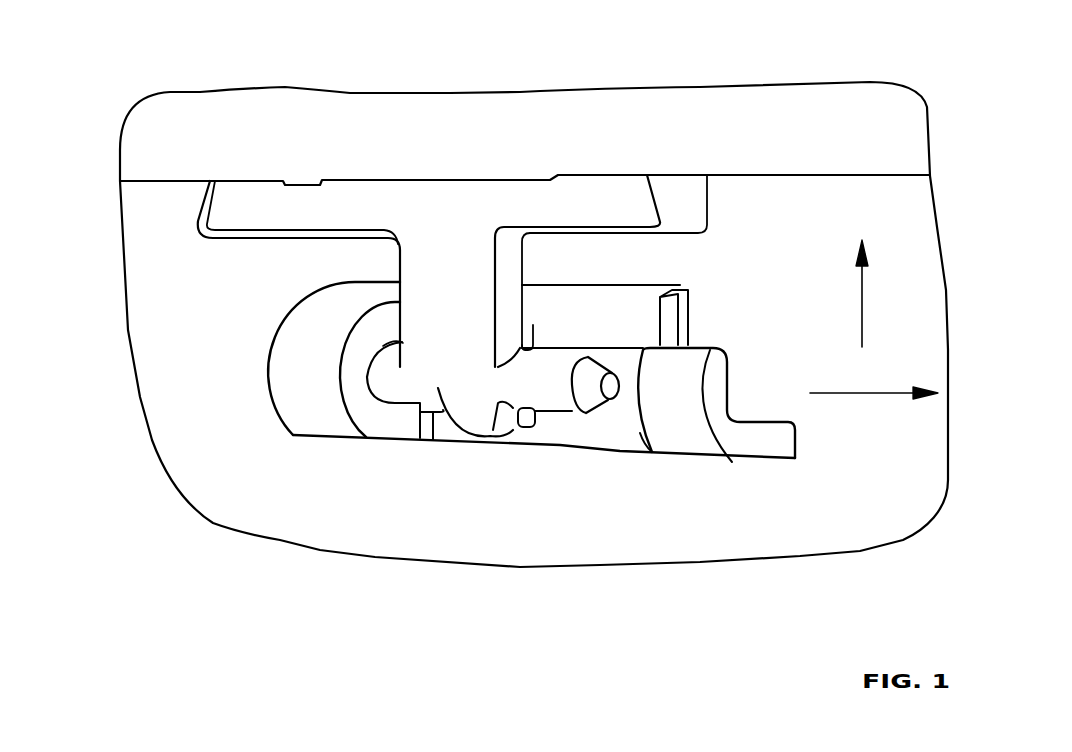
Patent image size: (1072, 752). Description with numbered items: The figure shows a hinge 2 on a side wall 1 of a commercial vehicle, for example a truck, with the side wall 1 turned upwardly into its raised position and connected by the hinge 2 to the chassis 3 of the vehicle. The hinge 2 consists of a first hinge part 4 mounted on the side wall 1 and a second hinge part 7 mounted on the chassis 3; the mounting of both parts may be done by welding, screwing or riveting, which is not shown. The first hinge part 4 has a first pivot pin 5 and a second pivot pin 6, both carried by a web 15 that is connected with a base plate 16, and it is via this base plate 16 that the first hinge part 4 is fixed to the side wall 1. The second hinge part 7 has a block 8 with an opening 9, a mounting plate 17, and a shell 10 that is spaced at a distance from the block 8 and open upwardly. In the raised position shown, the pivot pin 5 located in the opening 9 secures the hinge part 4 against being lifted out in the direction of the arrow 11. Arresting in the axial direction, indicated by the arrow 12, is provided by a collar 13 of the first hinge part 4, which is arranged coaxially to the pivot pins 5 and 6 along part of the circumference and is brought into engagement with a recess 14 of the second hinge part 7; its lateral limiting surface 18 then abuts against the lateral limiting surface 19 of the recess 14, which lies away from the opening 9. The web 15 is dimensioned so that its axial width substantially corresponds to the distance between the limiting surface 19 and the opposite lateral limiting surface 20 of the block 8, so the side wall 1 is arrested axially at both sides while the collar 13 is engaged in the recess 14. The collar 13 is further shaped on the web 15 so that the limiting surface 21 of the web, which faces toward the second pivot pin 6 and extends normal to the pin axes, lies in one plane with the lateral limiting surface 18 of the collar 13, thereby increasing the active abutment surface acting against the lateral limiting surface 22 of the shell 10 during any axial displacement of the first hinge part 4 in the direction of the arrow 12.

The side wall 1 is at (908, 115).
The hinge 2 is at (267, 294).
The chassis 3 is at (928, 240).
The first hinge part 4 is at (604, 173).
The first pivot pin 5 is at (388, 386).
The second pivot pin 6 is at (550, 395).
The second hinge part 7 is at (630, 453).
The block 8 is at (293, 348).
The opening 9 is at (378, 362).
The shell 10 is at (757, 443).
The arrow 11 is at (863, 305).
The arrow 12 is at (853, 395).
The collar 13 is at (495, 440).
The recess 14 is at (433, 412).
The web 15 is at (447, 268).
The base plate 16 is at (353, 197).
The mounting plate 17 is at (650, 330).
The lateral limiting surface 18 is at (523, 447).
The lateral limiting surface 19 is at (535, 337).
The lateral limiting surface 20 is at (385, 425).
The limiting surface 21 is at (513, 266).
The lateral limiting surface 22 is at (645, 462).